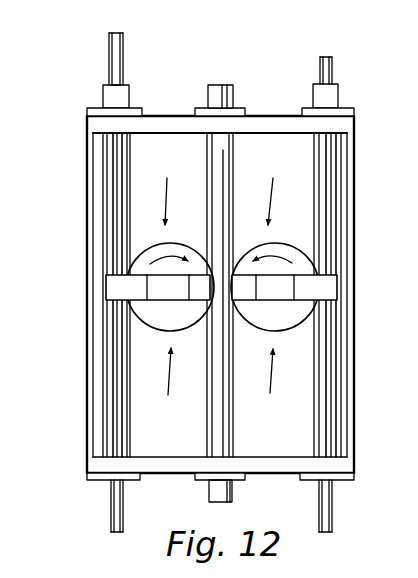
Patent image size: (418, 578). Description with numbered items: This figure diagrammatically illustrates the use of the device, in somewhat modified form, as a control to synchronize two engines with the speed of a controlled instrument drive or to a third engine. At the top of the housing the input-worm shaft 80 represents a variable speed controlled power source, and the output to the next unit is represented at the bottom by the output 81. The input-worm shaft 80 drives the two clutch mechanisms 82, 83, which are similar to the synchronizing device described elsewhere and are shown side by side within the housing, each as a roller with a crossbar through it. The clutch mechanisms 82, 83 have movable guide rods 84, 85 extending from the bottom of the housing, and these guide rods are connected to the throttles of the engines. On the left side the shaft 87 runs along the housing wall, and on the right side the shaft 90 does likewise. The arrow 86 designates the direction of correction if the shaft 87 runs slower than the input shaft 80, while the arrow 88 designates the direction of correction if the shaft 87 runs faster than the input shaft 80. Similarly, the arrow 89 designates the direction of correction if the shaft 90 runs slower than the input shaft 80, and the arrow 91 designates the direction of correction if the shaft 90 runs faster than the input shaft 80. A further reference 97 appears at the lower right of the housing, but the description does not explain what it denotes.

The input-worm shaft 80 is at (223, 83).
The output 81 is at (233, 490).
The clutch mechanism 82 is at (152, 332).
The clutch mechanism 83 is at (297, 331).
The movable guide rod 84 is at (110, 513).
The movable guide rod 85 is at (332, 513).
The arrow 86 is at (164, 190).
The shaft 87 is at (105, 418).
The arrow 88 is at (174, 386).
The arrow 89 is at (267, 190).
The shaft 90 is at (340, 388).
The arrow 91 is at (274, 386).
The housing 97 is at (417, 465).